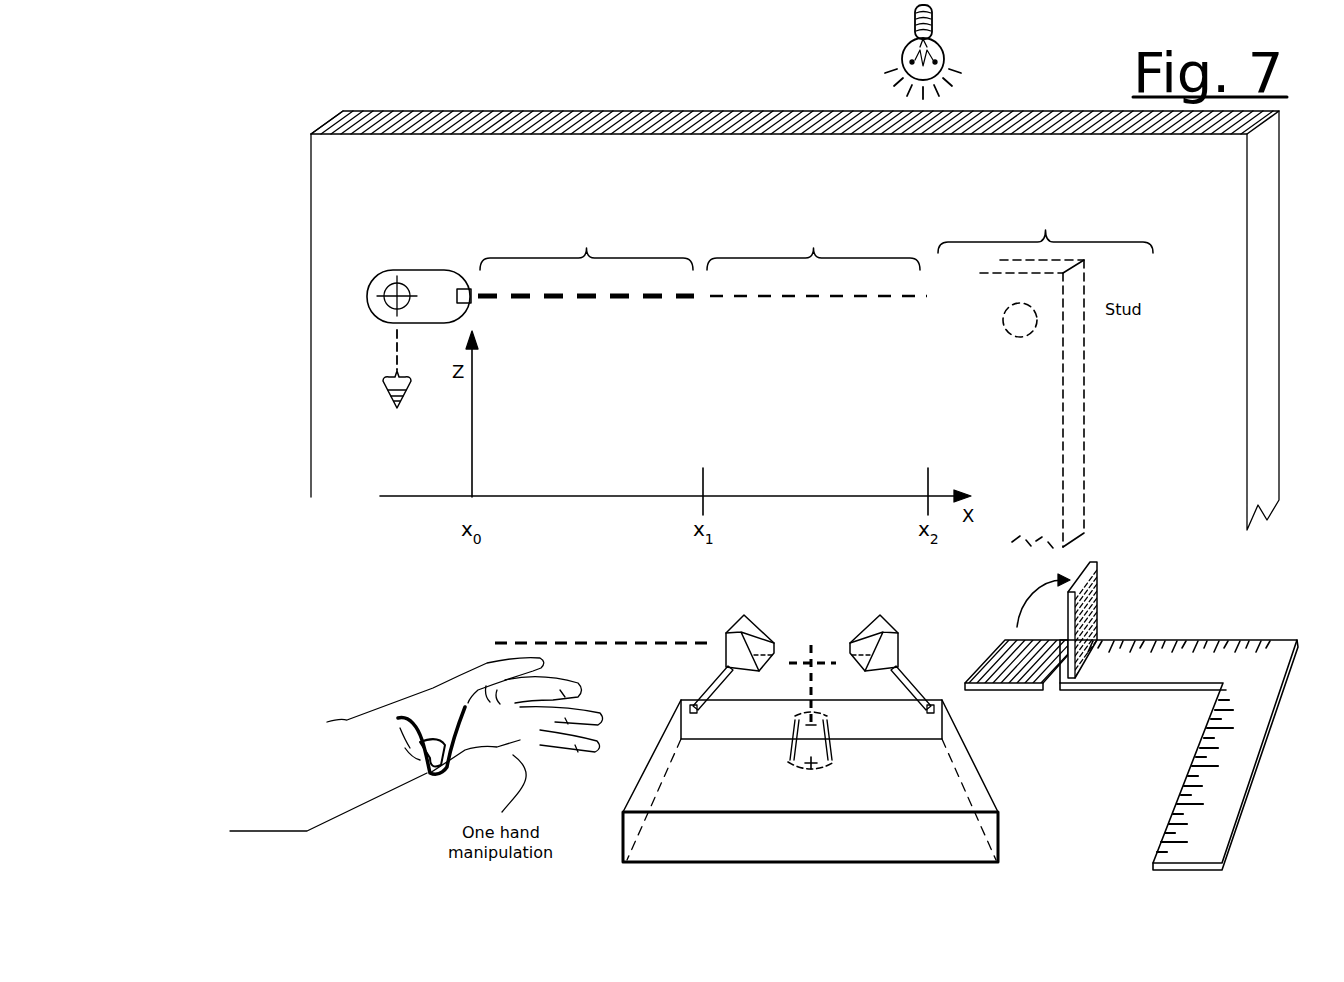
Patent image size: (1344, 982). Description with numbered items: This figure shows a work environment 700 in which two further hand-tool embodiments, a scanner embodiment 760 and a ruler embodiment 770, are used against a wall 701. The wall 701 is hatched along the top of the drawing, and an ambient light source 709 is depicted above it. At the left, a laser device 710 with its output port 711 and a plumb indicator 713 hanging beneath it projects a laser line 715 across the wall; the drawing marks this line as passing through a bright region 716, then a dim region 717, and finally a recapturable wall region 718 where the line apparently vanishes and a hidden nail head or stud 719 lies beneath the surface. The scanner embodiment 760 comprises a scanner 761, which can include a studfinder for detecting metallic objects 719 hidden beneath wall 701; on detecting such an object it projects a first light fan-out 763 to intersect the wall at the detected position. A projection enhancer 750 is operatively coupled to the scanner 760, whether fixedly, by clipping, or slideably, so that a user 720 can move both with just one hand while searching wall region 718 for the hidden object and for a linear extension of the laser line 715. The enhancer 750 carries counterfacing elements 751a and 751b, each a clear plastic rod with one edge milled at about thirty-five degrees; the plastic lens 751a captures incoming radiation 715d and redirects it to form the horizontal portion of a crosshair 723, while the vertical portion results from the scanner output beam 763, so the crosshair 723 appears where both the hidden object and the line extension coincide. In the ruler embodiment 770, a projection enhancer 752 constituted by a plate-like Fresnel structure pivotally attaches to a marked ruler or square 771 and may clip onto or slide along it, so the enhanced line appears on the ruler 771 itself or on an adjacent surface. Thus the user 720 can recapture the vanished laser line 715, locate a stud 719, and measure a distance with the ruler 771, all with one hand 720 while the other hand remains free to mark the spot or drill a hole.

The work environment 700 is at (438, 83).
The wall 701 is at (602, 124).
The ambient light source 709 is at (885, 64).
The laser device 710 is at (422, 272).
The laser aperture 711 is at (470, 275).
The plumb bob 713 is at (400, 420).
The laser line 715 is at (690, 305).
The incoming radiation 715d is at (602, 641).
The bright beam region 716 is at (586, 236).
The dim beam region 717 is at (813, 236).
The wall region 718 is at (1045, 216).
The hidden metallic object 719 is at (1027, 334).
The user 720 is at (350, 720).
The crosshair image 723 is at (818, 650).
The projection enhancer 750 is at (786, 645).
The prismatic lens 751a is at (728, 623).
The counterfacing element 751b is at (900, 650).
The projection enhancer 752 is at (1098, 566).
The scanner embodiment 760 is at (810, 801).
The scanner 761 is at (810, 837).
The first light fan-out 763 is at (815, 672).
The ruler embodiment 770 is at (1131, 717).
The marked ruler or square 771 is at (1140, 690).